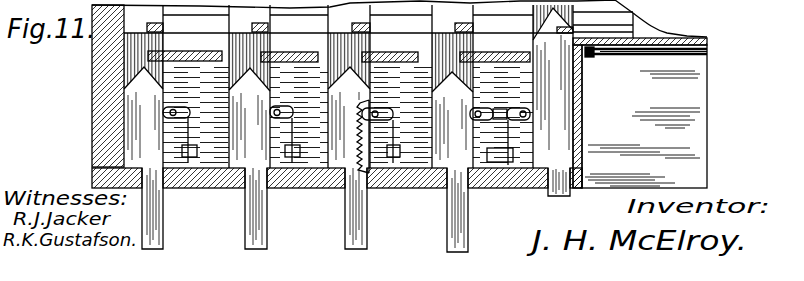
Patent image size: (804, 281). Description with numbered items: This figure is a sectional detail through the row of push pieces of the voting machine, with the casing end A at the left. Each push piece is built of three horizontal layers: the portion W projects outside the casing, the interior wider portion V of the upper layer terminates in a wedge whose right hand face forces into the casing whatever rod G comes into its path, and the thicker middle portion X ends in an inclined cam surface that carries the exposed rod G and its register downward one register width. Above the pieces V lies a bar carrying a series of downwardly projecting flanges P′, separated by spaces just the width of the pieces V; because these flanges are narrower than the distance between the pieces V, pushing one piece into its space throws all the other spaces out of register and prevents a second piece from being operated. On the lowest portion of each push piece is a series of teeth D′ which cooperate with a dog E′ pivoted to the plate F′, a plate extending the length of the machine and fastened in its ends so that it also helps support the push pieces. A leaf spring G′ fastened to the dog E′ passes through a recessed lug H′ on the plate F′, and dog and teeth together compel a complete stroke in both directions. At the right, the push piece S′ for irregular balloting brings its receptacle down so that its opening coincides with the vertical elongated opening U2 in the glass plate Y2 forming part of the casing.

The end wall A is at (92, 76).
The sliding rod G is at (149, 23).
The middle portion of push piece X is at (348, 48).
The interior wider portion of push piece V is at (348, 84).
The projecting portion of push piece W is at (245, 219).
The downwardly projecting flanges P′ is at (223, 56).
The dog E′ is at (163, 109).
The plate F′ is at (526, 121).
The leaf spring G′ is at (293, 123).
The recessed lug H′ is at (300, 151).
The series of teeth D′ is at (372, 136).
The push piece for irregular balloting S′ is at (563, 95).
The vertical elongated opening U2 is at (594, 57).
The glass plate Y2 is at (627, 57).